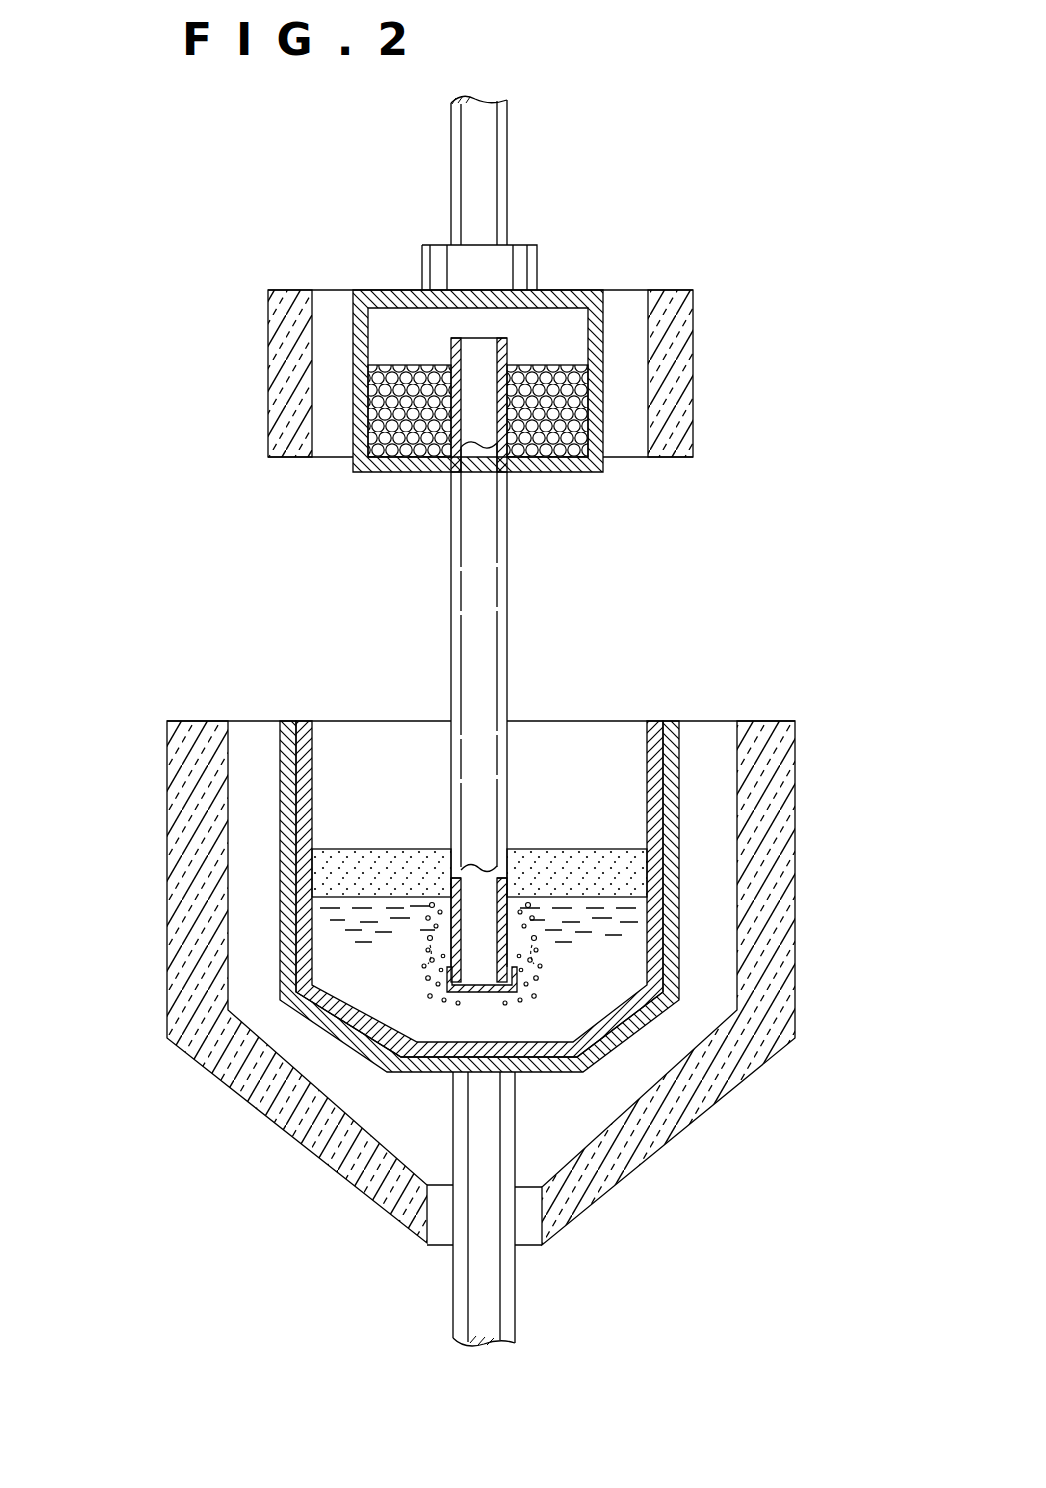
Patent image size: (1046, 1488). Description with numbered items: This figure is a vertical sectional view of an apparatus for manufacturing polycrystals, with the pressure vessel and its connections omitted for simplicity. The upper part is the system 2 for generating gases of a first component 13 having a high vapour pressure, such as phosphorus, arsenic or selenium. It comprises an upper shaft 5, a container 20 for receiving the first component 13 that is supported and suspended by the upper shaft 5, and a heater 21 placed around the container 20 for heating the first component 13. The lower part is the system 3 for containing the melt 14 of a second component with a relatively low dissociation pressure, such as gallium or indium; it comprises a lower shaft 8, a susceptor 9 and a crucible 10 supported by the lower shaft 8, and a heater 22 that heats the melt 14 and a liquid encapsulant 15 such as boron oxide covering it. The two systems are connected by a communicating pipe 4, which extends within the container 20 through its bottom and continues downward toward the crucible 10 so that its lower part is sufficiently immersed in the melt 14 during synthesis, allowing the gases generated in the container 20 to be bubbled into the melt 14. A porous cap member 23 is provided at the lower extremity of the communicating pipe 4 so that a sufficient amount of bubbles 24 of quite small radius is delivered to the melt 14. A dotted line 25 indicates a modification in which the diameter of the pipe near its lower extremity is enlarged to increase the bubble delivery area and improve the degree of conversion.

The system for generating gases of a first component 2 is at (670, 233).
The system for containing melt of the second component 3 is at (770, 664).
The communicating pipe 4 is at (489, 612).
The upper shaft 5 is at (487, 190).
The lower shaft 8 is at (500, 1295).
The susceptor 9 is at (674, 721).
The crucible 10 is at (658, 721).
The first component 13 is at (548, 432).
The melt 14 is at (545, 1005).
The liquid encapsulant 15 is at (378, 862).
The container 20 is at (380, 290).
The heater 21 is at (268, 330).
The heater 22 is at (167, 787).
The porous cap member 23 is at (462, 1000).
The bubbles 24 is at (432, 940).
The dotted line 25 is at (537, 962).